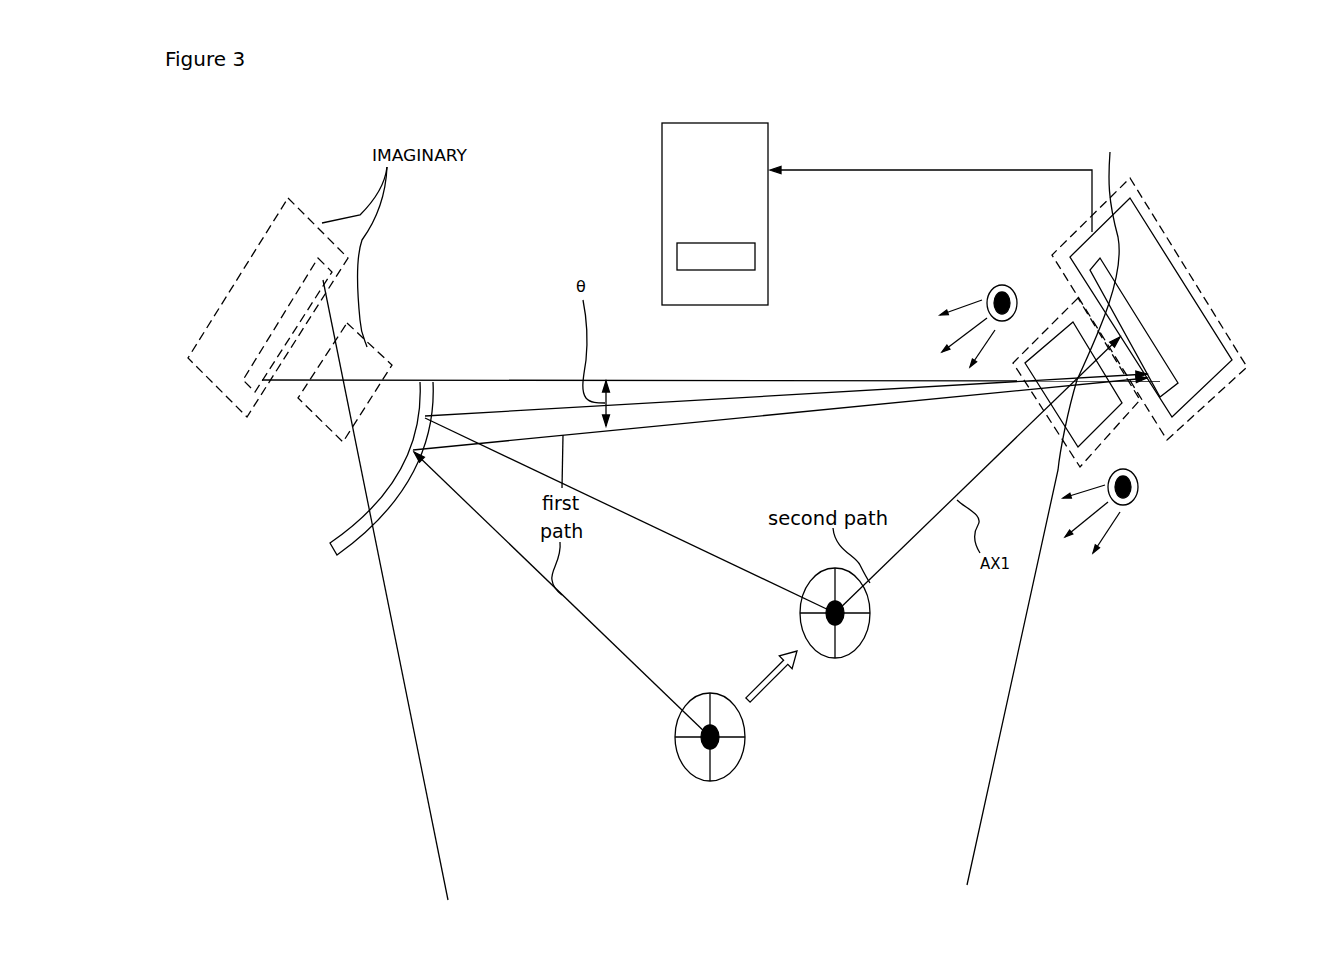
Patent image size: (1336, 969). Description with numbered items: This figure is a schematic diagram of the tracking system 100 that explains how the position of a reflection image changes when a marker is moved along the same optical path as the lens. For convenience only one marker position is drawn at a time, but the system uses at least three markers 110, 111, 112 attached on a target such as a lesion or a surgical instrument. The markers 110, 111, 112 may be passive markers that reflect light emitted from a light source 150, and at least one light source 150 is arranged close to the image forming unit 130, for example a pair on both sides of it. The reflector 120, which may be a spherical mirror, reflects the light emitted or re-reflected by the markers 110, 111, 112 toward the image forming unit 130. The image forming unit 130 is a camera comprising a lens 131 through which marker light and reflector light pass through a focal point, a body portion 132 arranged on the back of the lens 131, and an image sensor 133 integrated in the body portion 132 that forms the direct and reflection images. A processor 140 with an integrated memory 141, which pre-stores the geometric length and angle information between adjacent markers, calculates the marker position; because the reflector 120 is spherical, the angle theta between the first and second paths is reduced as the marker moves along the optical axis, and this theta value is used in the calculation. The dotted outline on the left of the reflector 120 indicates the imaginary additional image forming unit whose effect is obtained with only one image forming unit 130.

The tracking system 100 is at (258, 116).
The marker 110 is at (756, 732).
The marker 111 is at (710, 737).
The marker 112 is at (699, 782).
The reflector 120 is at (427, 413).
The image forming unit 130 is at (1175, 238).
The lens 131 is at (1103, 418).
The body portion 132 is at (1083, 257).
The image sensor 133 is at (1048, 503).
The processor 140 is at (662, 168).
The memory 141 is at (755, 255).
The light source 150 is at (992, 285).